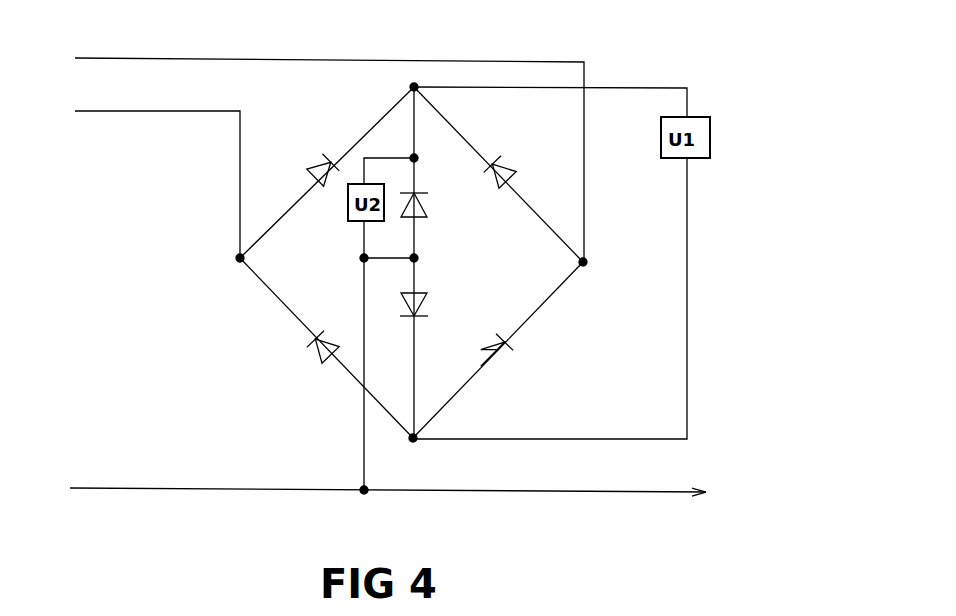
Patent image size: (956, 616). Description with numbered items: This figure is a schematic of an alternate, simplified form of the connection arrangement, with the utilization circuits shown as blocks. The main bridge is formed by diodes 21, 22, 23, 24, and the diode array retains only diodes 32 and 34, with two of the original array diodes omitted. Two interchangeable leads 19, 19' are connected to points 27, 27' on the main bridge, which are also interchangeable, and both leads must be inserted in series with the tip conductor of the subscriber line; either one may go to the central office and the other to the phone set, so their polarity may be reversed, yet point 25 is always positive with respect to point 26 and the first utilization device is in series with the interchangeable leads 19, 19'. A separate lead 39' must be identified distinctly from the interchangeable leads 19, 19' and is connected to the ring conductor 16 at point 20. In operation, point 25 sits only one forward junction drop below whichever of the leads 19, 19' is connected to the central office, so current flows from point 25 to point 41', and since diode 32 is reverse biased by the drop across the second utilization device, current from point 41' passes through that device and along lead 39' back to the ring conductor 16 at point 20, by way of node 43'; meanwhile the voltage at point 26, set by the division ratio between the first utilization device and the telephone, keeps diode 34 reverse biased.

The interchangeable lead 19 is at (323, 148).
The interchangeable lead 19' is at (151, 172).
The ring conductor 16 is at (132, 489).
The point 25 is at (412, 85).
The point 41' is at (430, 149).
The diode 32 is at (427, 197).
The node 43' is at (407, 254).
The diode 34 is at (420, 305).
The diode 21 is at (320, 164).
The diode 22 is at (498, 163).
The diode 23 is at (504, 354).
The diode 24 is at (316, 358).
The point 27 is at (221, 268).
The point 27' is at (598, 277).
The lead 39' is at (345, 374).
The point 26 is at (410, 442).
The point 20 is at (366, 494).